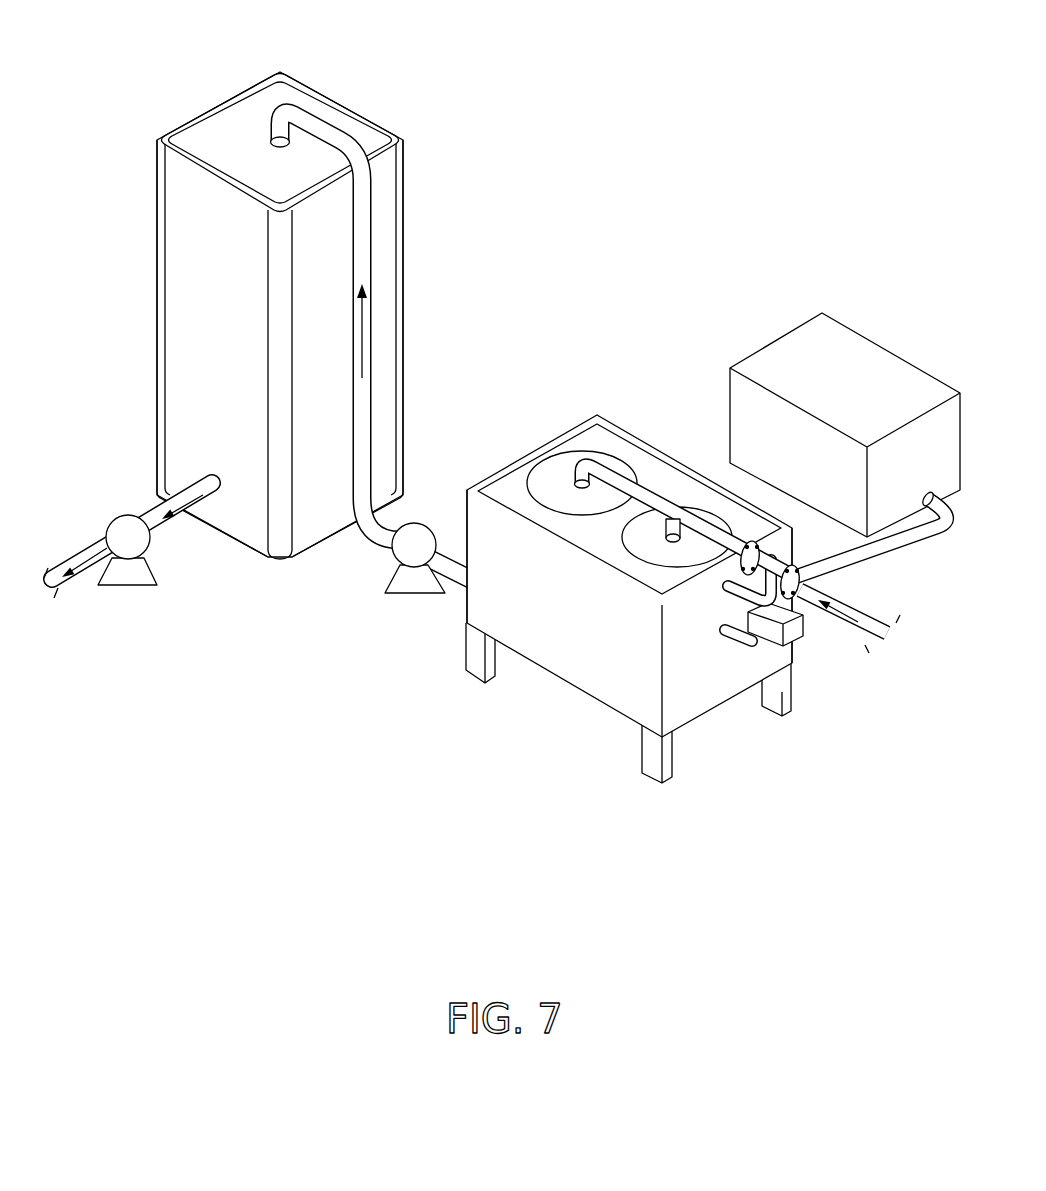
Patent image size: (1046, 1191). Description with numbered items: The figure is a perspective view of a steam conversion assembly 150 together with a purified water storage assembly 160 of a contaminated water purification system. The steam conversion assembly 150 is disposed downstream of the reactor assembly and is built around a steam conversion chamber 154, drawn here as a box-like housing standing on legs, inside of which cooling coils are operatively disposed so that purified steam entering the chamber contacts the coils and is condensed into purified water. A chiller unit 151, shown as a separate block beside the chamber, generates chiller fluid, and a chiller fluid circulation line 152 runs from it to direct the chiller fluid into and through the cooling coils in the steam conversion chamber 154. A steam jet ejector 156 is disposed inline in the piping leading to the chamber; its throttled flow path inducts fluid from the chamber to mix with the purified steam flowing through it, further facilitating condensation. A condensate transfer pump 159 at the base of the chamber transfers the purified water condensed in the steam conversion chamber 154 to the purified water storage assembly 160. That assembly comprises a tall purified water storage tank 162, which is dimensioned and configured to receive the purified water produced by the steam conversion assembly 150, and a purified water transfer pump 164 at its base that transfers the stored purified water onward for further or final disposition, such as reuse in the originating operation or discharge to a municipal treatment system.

The steam conversion assembly 150 is at (735, 730).
The chiller unit 151 is at (858, 332).
The chiller fluid circulation line 152 is at (890, 560).
The steam conversion chamber 154 is at (580, 697).
The steam jet ejector 156 is at (767, 558).
The condensate transfer pump 159 is at (412, 522).
The purified water storage assembly 160 is at (351, 88).
The purified water storage tank 162 is at (400, 292).
The purified water transfer pump 164 is at (127, 515).